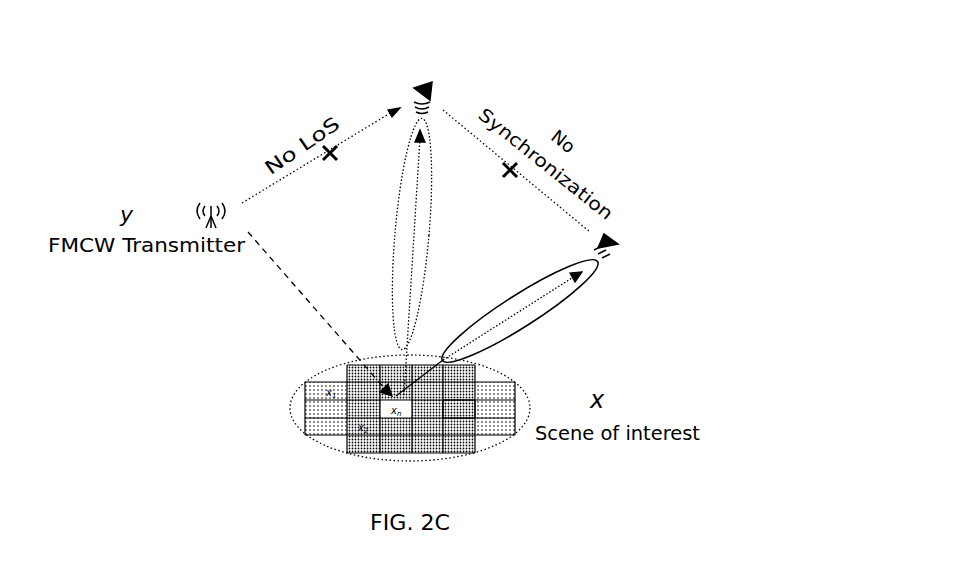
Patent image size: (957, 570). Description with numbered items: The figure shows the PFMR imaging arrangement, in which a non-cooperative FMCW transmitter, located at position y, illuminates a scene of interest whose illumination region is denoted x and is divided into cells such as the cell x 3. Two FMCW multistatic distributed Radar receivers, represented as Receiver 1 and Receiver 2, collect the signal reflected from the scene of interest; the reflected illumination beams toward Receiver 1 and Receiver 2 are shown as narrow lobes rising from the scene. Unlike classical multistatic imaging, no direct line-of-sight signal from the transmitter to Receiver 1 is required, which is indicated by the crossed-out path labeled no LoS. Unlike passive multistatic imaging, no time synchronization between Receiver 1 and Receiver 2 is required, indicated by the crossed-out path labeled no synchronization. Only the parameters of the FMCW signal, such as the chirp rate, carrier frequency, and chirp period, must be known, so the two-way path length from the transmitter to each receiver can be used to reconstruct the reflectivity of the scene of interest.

The Receiver 1 is at (469, 73).
The Receiver 2 is at (735, 245).
The scene cell x3 3 is at (459, 409).